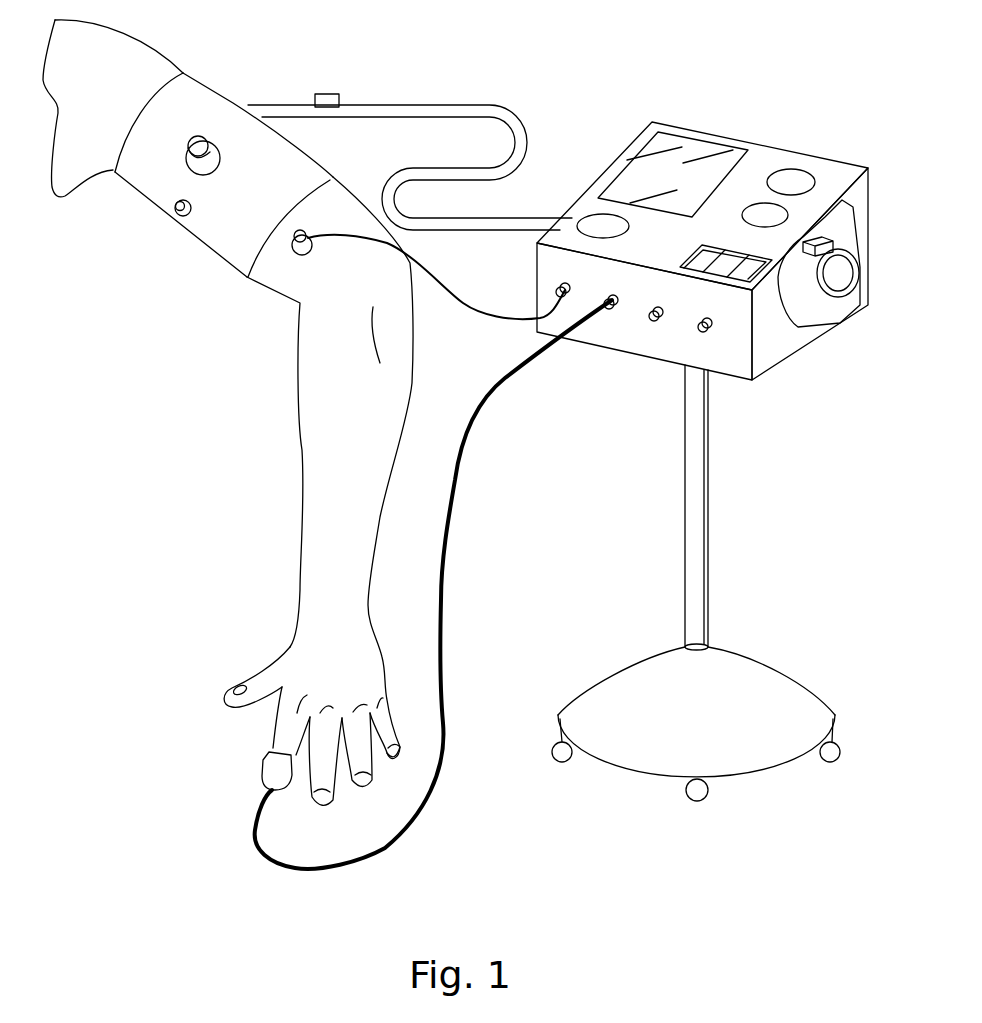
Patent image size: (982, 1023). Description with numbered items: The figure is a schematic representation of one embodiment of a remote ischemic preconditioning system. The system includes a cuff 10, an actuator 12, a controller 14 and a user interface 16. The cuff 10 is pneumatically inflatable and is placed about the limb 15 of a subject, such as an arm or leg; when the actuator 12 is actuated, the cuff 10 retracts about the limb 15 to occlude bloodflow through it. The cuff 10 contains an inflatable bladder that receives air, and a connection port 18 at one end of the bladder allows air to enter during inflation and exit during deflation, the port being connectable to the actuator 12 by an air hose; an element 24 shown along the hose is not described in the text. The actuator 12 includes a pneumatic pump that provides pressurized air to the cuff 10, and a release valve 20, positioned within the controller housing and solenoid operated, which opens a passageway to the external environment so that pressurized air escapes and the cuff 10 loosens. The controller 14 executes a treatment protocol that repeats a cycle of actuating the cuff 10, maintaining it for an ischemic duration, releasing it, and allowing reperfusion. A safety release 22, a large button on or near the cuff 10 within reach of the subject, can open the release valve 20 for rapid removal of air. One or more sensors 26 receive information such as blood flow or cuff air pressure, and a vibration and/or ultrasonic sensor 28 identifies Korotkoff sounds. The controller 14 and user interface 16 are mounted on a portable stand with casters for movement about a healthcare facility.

The cuff 10 is at (128, 180).
The actuator 12 is at (808, 283).
The controller 14 is at (826, 163).
The limb 15 is at (273, 273).
The user interface 16 is at (663, 140).
The connection port 18 is at (248, 104).
The release valve 20 is at (833, 245).
The safety release 22 is at (197, 136).
The connector 24 is at (343, 101).
The sensor 26 is at (175, 210).
The vibration and/or ultrasonic sensor 28 is at (305, 230).